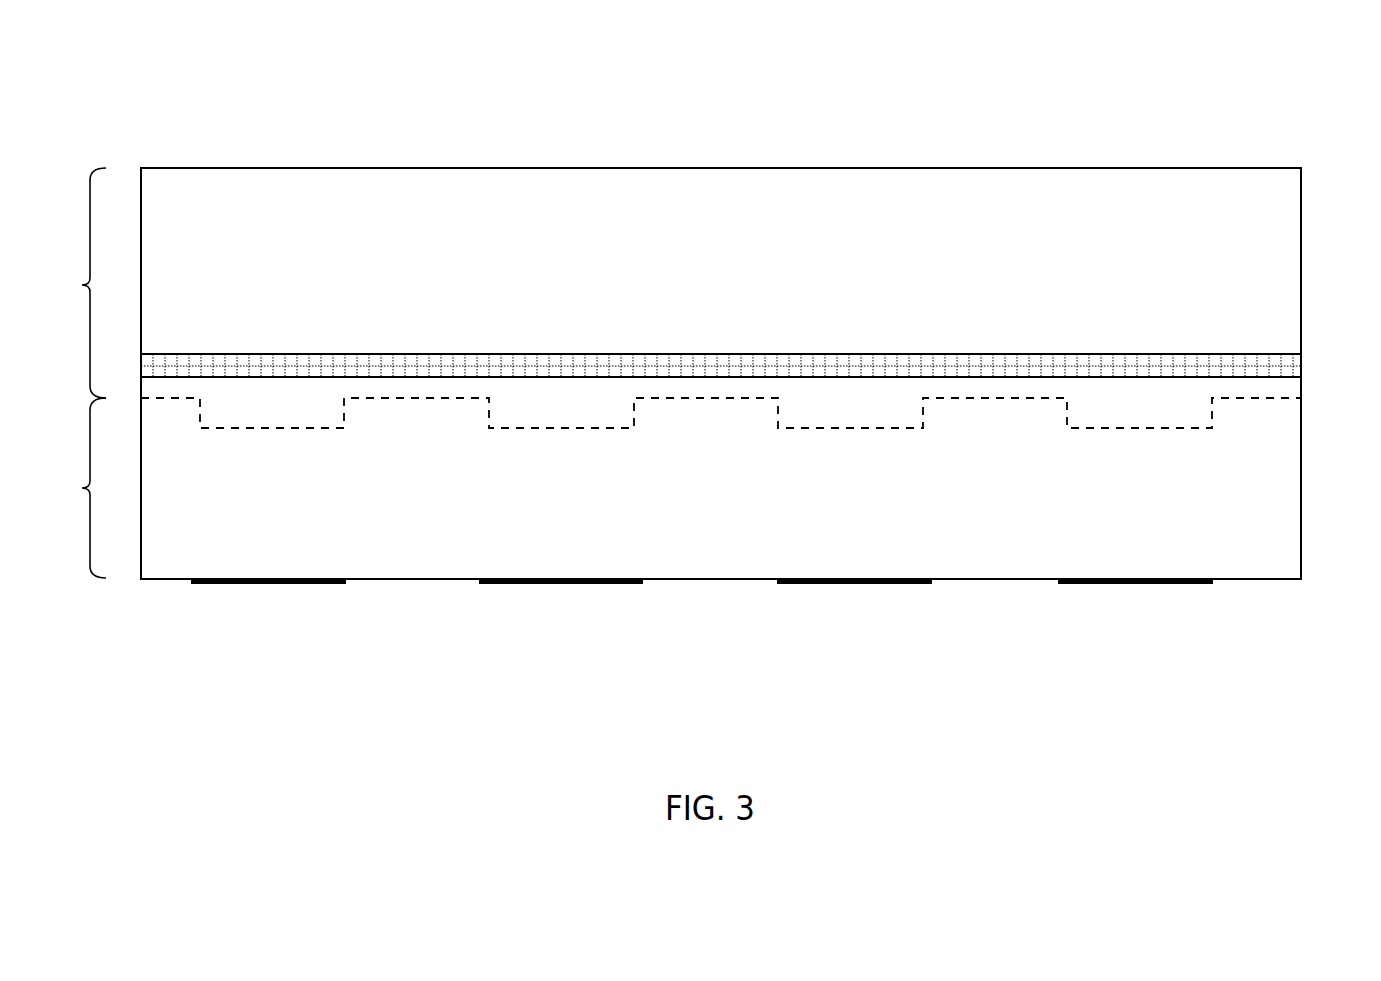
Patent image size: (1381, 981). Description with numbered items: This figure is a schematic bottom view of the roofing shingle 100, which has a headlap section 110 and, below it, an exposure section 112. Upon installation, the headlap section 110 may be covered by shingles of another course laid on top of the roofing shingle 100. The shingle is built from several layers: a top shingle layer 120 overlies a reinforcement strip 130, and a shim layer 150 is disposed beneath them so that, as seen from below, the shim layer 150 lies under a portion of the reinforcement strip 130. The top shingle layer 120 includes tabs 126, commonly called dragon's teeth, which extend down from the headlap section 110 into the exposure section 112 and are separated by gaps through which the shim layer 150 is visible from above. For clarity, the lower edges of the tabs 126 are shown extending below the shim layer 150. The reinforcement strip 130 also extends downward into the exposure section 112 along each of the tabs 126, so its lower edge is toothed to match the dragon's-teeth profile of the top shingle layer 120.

The roofing shingle 100 is at (402, 120).
The headlap section 110 is at (82, 285).
The exposure section 112 is at (82, 488).
The top shingle layer 120 is at (700, 282).
The tabs 126 is at (318, 598).
The reinforcement strip 130 is at (1320, 377).
The shim layer 150 is at (700, 523).